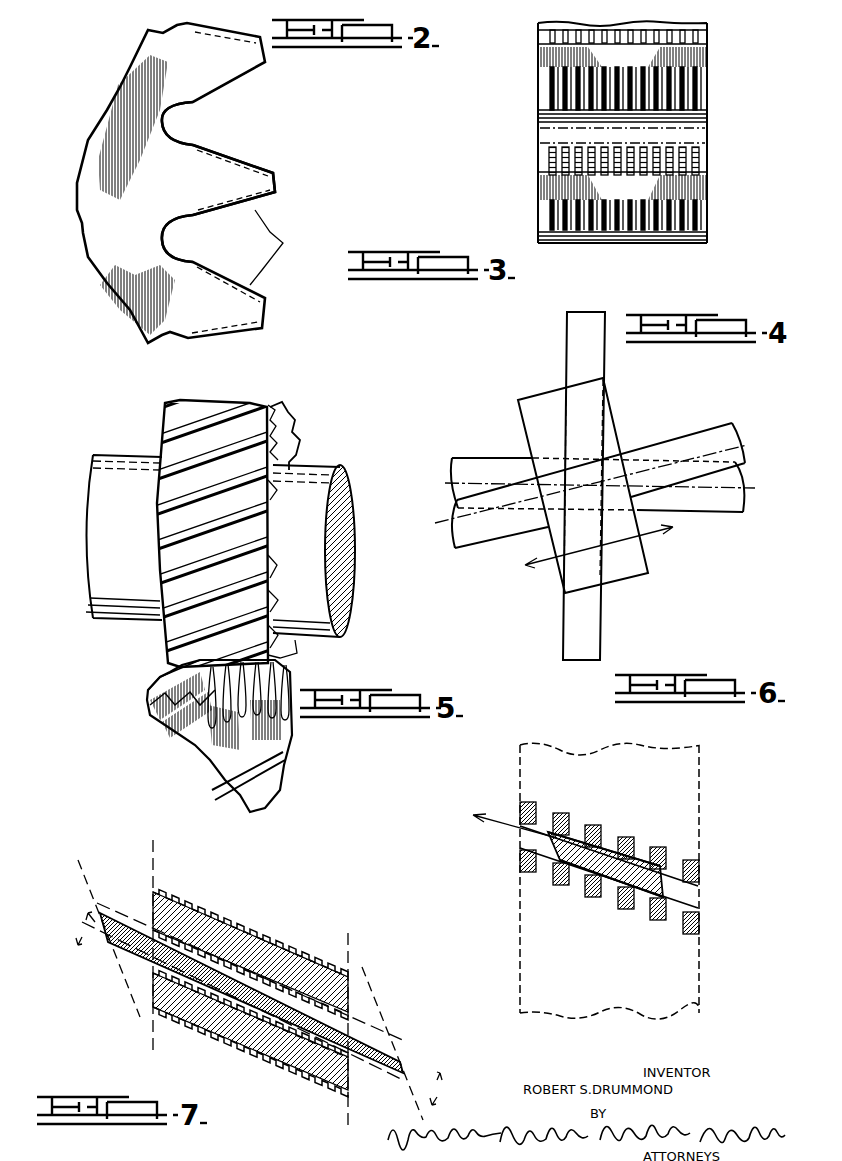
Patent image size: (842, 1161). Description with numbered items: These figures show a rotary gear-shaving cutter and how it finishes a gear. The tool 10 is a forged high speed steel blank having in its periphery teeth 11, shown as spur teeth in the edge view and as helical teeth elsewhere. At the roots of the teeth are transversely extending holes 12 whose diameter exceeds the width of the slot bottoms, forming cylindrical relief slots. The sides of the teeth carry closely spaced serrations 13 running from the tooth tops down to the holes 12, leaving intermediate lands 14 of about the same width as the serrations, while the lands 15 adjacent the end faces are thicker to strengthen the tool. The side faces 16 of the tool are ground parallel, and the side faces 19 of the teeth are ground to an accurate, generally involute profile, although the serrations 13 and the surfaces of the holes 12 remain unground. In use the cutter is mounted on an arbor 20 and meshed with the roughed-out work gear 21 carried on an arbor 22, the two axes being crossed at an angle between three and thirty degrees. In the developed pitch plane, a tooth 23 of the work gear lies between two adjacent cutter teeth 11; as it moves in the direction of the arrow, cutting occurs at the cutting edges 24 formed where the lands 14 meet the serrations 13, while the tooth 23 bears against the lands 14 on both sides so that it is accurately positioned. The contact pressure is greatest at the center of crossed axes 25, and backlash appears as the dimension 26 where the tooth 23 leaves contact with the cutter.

In FIG. 2, the tool 10 is at (92, 228).
In FIG. 4, the tool 10 is at (605, 360).
In FIG. 5, the tool 10 is at (265, 737).
In FIG. 6, the tool 10 is at (700, 800).
In FIG. 2, the teeth 11 is at (265, 183).
In FIG. 3, the teeth 11 is at (736, 192).
In FIG. 5, the teeth 11 is at (180, 745).
In FIG. 6, the teeth 11 is at (720, 952).
In FIG. 7, the teeth 11 is at (378, 1100).
In FIG. 2, the holes 12 is at (212, 247).
In FIG. 5, the holes 12 is at (195, 758).
In FIG. 2, the serrations 13 is at (250, 153).
In FIG. 3, the serrations 13 is at (740, 215).
In FIG. 6, the serrations 13 is at (575, 830).
In FIG. 3, the intermediate lands 14 is at (560, 178).
In FIG. 6, the intermediate lands 14 is at (560, 875).
In FIG. 3, the lands 15 is at (745, 150).
In FIG. 3, the side faces 16 is at (740, 70).
In FIG. 2, the side faces of the gear teeth 19 is at (278, 247).
In FIG. 4, the arbor 20 is at (728, 502).
In FIG. 4, the work gear 21 is at (533, 392).
In FIG. 5, the work gear 21 is at (258, 405).
In FIG. 4, the arbor 22 is at (500, 525).
In FIG. 5, the arbor 22 is at (330, 467).
In FIG. 6, the tooth 23 is at (665, 893).
In FIG. 7, the tooth 23 is at (400, 1060).
In FIG. 6, the cutting edges 24 is at (580, 925).
In FIG. 7, the center of crossed axes 25 is at (253, 992).
In FIG. 7, the dimension 26 is at (480, 1098).